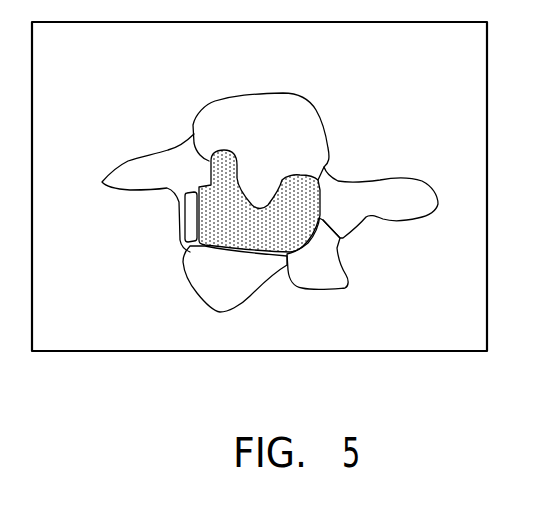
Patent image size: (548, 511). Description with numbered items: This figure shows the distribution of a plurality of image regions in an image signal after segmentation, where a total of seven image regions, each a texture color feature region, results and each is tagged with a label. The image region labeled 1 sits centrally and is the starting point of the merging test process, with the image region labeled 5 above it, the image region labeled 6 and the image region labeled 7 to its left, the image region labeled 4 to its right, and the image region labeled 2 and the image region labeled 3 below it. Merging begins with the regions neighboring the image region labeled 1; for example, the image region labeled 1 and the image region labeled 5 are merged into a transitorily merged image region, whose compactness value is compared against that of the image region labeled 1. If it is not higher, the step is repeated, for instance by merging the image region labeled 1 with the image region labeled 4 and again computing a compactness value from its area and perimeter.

The image region labeled 1 is at (259, 201).
The image region labeled 2 is at (235, 279).
The image region labeled 3 is at (317, 254).
The image region labeled 4 is at (380, 202).
The image region labeled 5 is at (261, 136).
The image region labeled 6 is at (148, 193).
The image region labeled 7 is at (189, 217).